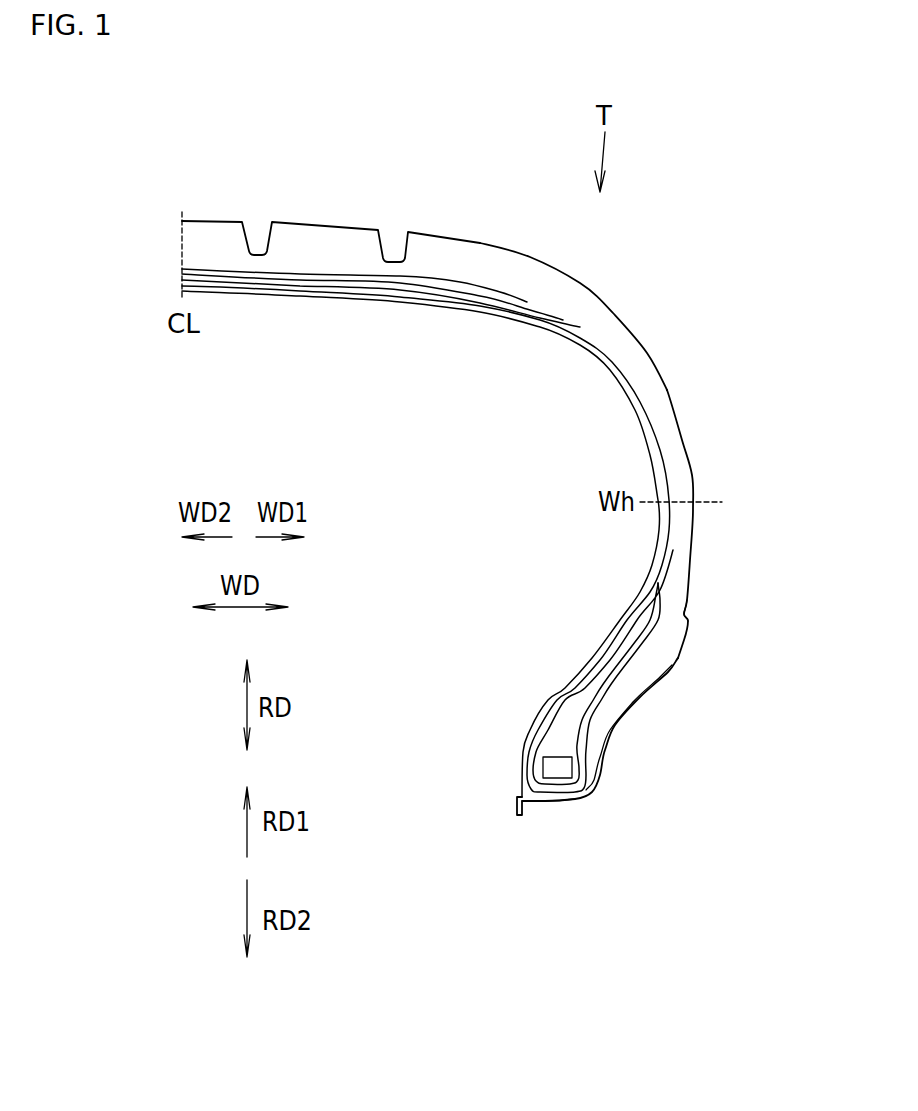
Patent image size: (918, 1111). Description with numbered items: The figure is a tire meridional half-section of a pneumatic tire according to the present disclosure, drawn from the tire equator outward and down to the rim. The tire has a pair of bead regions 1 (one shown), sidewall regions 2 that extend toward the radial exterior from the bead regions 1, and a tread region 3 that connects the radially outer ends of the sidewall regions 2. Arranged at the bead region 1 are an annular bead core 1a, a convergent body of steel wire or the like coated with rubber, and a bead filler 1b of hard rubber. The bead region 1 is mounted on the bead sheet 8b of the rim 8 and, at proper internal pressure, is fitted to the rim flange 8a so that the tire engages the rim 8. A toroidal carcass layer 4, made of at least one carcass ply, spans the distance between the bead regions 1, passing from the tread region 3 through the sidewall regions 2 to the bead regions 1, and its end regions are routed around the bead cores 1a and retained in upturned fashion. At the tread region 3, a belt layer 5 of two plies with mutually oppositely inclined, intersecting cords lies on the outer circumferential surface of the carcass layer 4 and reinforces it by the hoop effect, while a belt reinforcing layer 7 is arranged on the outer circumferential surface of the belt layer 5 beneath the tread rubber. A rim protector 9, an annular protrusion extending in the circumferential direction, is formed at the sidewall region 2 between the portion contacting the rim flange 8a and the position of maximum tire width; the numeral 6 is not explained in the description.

The bead region 1 is at (419, 747).
The bead core 1a is at (553, 772).
The bead filler 1b is at (563, 717).
The sidewall region 2 is at (707, 458).
The tread region 3 is at (304, 157).
The carcass layer 4 is at (655, 427).
The belt layer 5 is at (342, 278).
The belt reinforcing layer (6c) 6 is at (243, 270).
The belt reinforcing layer 7 is at (453, 282).
The rim 8 is at (624, 783).
The rim flange 8a is at (630, 693).
The bead sheet 8b is at (543, 807).
The rim protector 9 is at (690, 638).